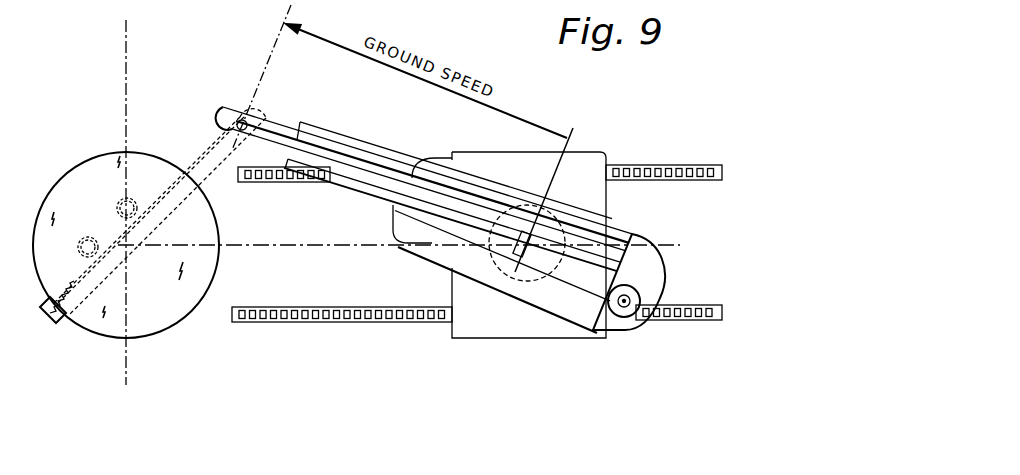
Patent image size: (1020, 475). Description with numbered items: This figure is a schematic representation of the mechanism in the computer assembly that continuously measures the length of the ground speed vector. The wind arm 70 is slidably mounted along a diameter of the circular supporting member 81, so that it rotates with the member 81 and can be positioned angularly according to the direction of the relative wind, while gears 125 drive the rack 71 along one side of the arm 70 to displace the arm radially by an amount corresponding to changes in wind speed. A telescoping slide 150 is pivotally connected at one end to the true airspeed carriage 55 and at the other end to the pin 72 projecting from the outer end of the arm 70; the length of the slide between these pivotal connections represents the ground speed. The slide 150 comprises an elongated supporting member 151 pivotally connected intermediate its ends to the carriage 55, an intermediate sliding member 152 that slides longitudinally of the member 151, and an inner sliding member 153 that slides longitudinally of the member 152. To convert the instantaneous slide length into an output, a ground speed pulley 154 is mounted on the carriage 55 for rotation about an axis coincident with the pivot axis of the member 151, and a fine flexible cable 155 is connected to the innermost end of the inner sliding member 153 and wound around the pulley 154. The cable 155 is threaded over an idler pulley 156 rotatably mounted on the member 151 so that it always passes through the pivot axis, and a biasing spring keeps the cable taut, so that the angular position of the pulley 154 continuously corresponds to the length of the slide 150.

The true airspeed carriage 55 is at (506, 322).
The arm 70 is at (212, 165).
The rack 71 is at (44, 312).
The pin 72 is at (265, 102).
The circular supporting member 81 is at (167, 318).
The gears 125 is at (122, 199).
The telescoping slide 150 is at (385, 222).
The elongated supporting member 151 is at (652, 268).
The intermediate sliding member 152 is at (332, 140).
The inner sliding member 153 is at (220, 113).
The ground speed pulley 154 is at (592, 204).
The flexible cable 155 is at (388, 207).
The idler pulley 156 is at (630, 322).